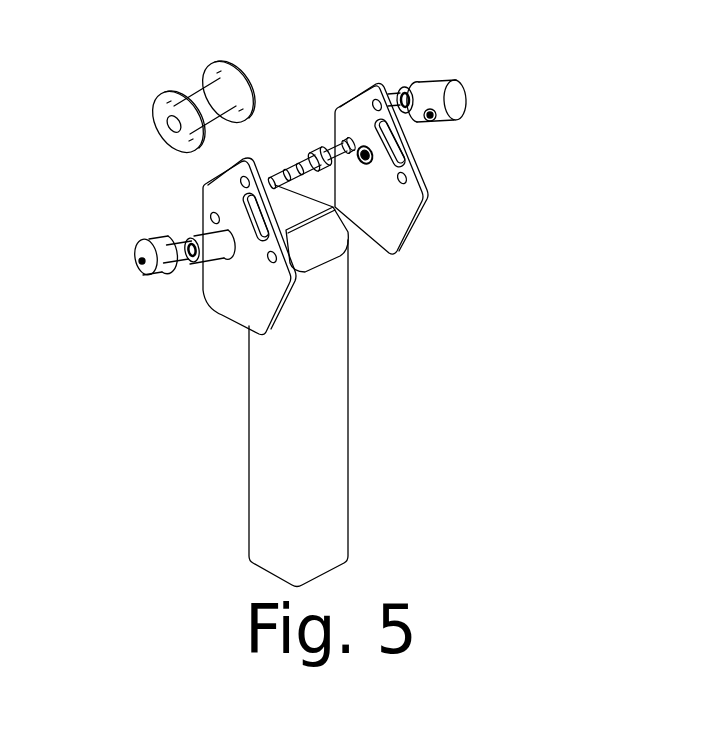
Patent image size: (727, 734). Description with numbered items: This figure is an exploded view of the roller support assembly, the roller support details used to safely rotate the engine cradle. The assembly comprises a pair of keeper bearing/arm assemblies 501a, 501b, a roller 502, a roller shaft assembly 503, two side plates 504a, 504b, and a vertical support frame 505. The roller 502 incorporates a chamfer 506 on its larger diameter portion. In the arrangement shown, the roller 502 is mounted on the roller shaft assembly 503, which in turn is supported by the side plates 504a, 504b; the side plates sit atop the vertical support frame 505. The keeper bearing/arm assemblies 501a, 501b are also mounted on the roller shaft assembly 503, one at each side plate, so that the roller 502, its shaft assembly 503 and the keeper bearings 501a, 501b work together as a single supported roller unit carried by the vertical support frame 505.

The keeper bearing/arm assembly 501a is at (467, 122).
The keeper bearing/arm assembly 501b is at (178, 267).
The roller 502 is at (170, 135).
The roller shaft assembly 503 is at (301, 153).
The side plate 504a is at (408, 245).
The side plate 504b is at (232, 322).
The vertical support frame 505 is at (352, 423).
The chamfer 506 is at (203, 43).